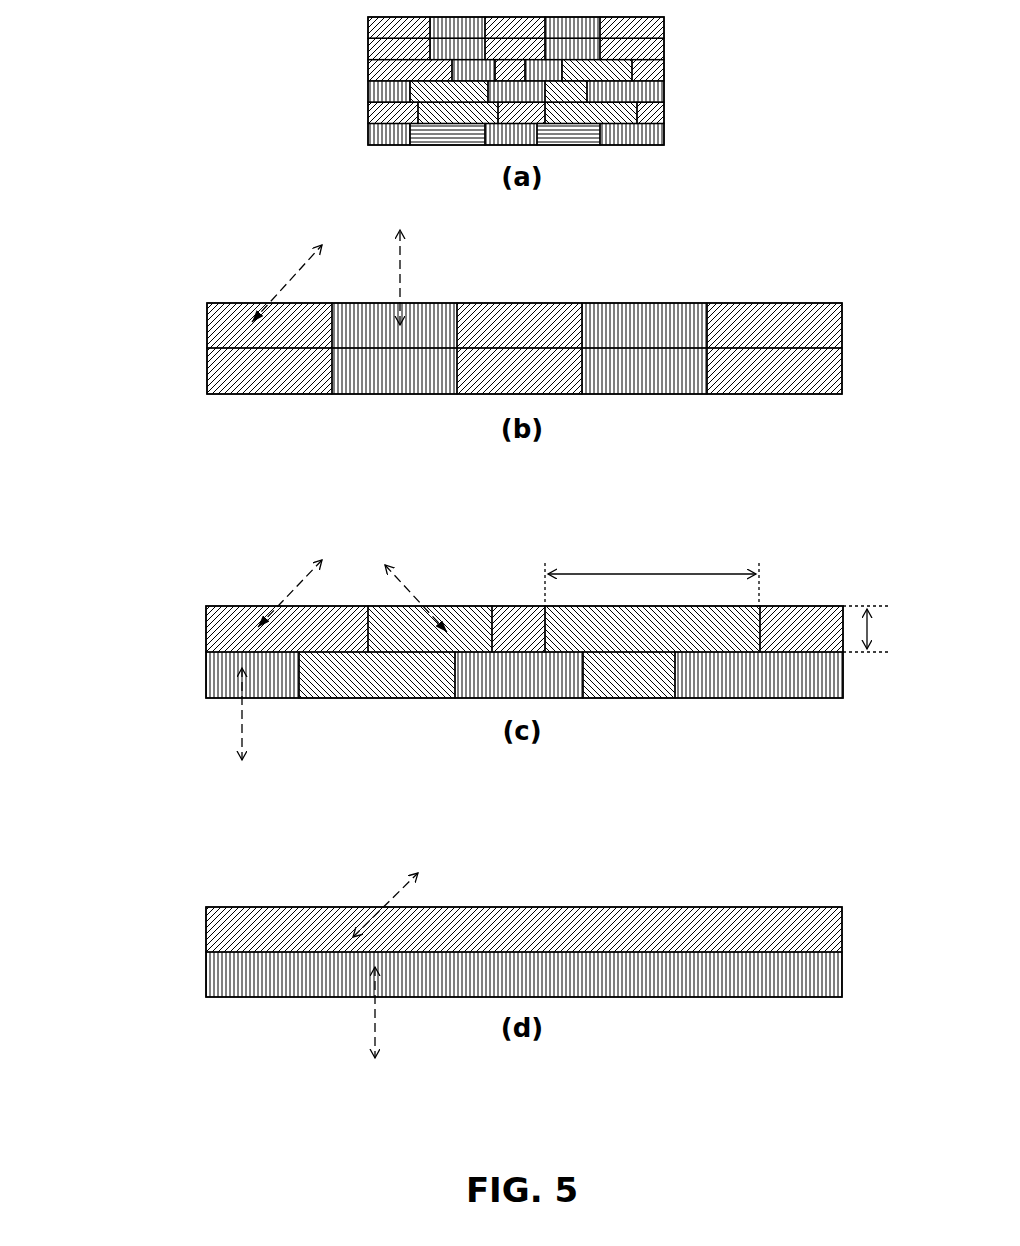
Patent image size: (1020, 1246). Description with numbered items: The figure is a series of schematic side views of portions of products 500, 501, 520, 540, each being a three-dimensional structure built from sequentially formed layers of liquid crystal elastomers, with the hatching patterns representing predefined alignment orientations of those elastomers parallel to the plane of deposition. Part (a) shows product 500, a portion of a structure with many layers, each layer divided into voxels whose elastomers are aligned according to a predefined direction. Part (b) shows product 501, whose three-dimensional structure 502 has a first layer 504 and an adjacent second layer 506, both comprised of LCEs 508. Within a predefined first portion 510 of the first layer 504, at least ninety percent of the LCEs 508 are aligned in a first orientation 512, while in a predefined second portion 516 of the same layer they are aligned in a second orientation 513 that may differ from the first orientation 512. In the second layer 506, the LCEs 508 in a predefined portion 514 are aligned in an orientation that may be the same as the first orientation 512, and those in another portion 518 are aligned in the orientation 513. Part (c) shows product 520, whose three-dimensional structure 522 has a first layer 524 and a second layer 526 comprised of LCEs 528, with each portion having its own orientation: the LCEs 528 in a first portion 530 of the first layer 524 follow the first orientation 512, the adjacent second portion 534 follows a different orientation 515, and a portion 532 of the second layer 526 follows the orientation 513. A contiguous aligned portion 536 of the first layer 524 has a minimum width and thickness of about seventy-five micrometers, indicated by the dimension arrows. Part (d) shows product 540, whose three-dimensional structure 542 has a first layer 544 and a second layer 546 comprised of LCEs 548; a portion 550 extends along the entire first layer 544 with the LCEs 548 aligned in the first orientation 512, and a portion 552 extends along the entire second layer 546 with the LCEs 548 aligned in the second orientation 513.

The product 500 is at (360, 44).
The product 501 is at (168, 247).
The 3D structure 502 is at (782, 281).
The first layer 504 is at (207, 327).
The second layer 506 is at (207, 368).
The LCEs 508 is at (243, 315).
The predefined first portion 510 is at (314, 303).
The first orientation 512 is at (300, 268).
The second orientation 513 is at (400, 265).
The predefined portion of the second layer 514 is at (290, 395).
The orientation 515 is at (405, 587).
The predefined second portion 516 is at (439, 303).
The portion of the second layer 518 is at (423, 395).
The product 520 is at (163, 551).
The 3D structure 522 is at (803, 578).
The first layer 524 is at (206, 637).
The second layer 526 is at (206, 676).
The LCEs 528 is at (243, 622).
The first portion 530 is at (314, 606).
The portion of the second layer 532 is at (284, 700).
The second portion 534 is at (443, 606).
The portion 536 is at (684, 606).
The product 540 is at (173, 863).
The 3D structure 542 is at (813, 897).
The first layer 544 is at (206, 937).
The second layer 546 is at (206, 978).
The LCEs 548 is at (282, 922).
The portion 550 is at (479, 907).
The portion 552 is at (618, 998).